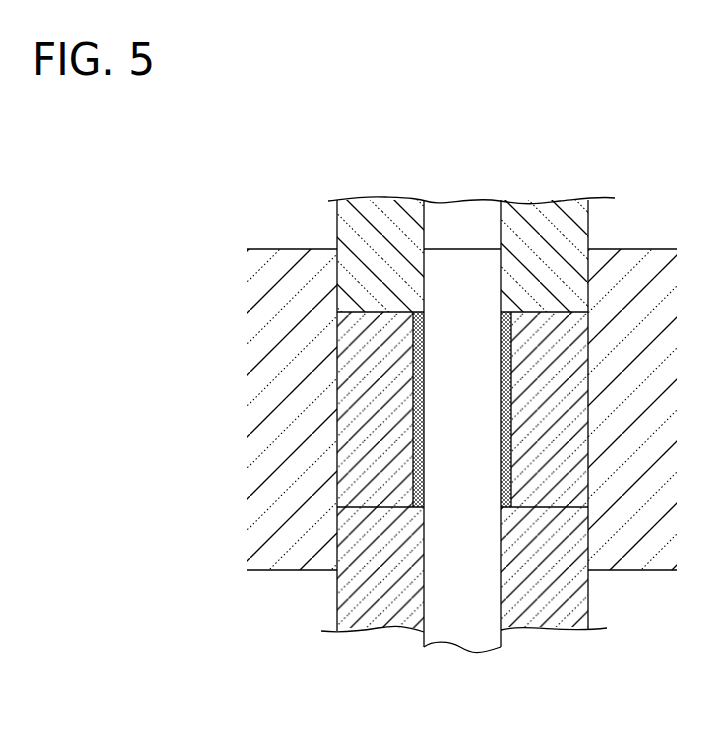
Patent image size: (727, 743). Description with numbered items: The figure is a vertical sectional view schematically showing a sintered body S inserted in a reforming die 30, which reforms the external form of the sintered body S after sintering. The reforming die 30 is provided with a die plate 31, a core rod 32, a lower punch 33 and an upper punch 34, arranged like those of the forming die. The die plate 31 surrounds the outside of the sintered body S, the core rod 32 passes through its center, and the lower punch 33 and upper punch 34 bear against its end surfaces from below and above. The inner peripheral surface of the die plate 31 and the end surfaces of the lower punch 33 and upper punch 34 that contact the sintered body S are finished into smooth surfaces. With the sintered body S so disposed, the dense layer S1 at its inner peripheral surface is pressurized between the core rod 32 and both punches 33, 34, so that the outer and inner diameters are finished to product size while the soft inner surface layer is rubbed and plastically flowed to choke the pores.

The reforming die 30 is at (605, 183).
The die plate 31 is at (287, 258).
The core rod 32 is at (486, 637).
The lower punch 33 is at (363, 616).
The upper punch 34 is at (378, 215).
The sintered body S is at (365, 508).
The dense layer S1 is at (417, 312).